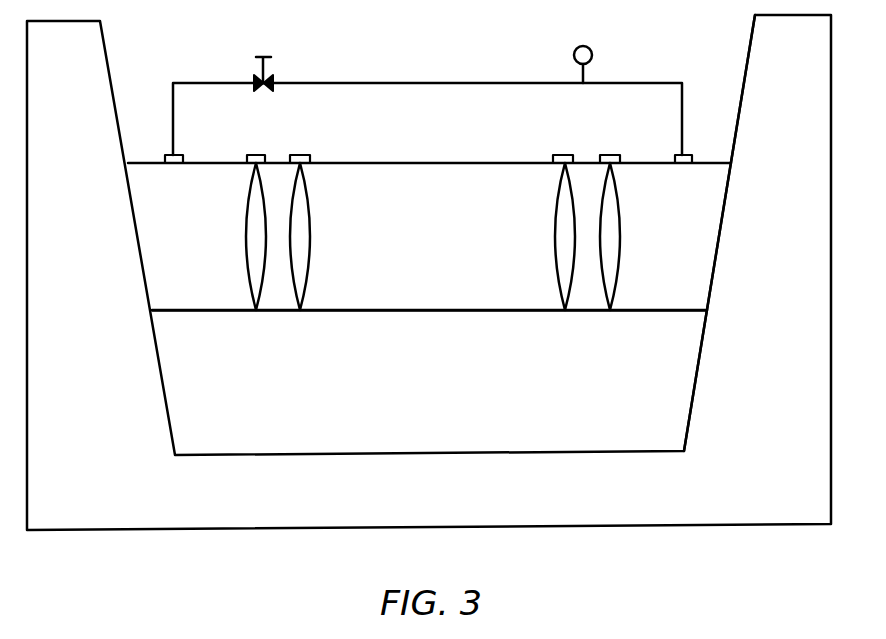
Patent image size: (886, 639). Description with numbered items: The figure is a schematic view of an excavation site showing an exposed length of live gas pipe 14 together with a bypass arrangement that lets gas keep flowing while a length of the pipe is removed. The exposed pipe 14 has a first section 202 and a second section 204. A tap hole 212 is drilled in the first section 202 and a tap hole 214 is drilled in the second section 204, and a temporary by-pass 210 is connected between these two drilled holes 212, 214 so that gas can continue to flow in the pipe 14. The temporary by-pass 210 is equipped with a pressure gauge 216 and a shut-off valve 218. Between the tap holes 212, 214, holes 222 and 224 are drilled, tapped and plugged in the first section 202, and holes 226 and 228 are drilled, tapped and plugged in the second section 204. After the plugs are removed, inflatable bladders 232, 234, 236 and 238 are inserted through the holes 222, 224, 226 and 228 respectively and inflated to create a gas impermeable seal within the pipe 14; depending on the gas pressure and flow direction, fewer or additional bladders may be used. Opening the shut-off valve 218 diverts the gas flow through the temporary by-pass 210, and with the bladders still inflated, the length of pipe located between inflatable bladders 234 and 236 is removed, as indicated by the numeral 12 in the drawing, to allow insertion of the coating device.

The substrate 12 is at (343, 305).
The live gas pipe 14 is at (483, 311).
The first section 202 is at (204, 320).
The second section 204 is at (651, 322).
The temporary by-pass 210 is at (472, 83).
The tap hole 212 is at (165, 157).
The tap hole 214 is at (692, 158).
The pressure gauge 216 is at (592, 55).
The shut-off valve 218 is at (265, 58).
The hole 222 is at (249, 158).
The hole 224 is at (312, 160).
The hole 226 is at (552, 158).
The hole 228 is at (645, 140).
The inflatable bladder 232 is at (247, 288).
The inflatable bladder 234 is at (310, 282).
The inflatable bladder 236 is at (553, 285).
The inflatable bladder 238 is at (620, 275).